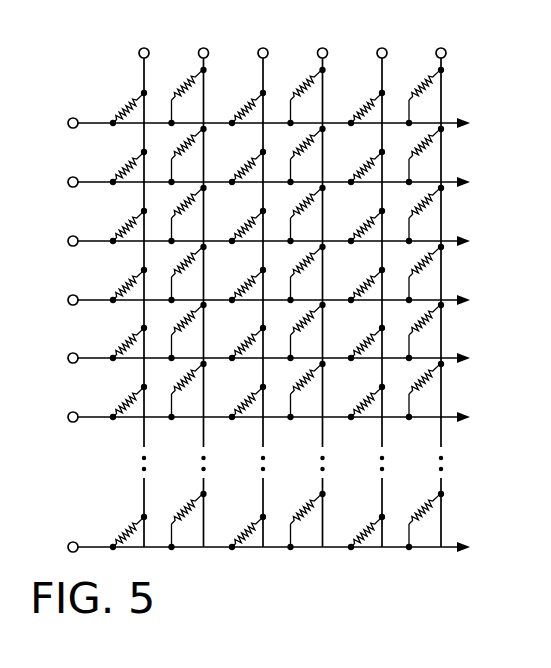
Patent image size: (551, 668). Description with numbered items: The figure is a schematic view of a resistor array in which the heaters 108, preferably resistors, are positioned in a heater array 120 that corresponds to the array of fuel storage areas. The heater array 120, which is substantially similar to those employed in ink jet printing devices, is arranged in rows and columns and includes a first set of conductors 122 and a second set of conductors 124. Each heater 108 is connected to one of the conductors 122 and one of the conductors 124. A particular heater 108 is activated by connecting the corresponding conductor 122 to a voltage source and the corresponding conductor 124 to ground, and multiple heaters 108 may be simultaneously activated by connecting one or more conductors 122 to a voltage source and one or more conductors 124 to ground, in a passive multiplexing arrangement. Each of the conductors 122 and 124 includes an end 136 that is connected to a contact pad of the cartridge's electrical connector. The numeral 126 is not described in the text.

The heater 108 is at (130, 103).
The heater array 120 is at (235, 326).
The first set of conductors 122 is at (92, 125).
The second set of conductors 124 is at (147, 73).
The row line 126 is at (235, 311).
The end 136 is at (263, 47).